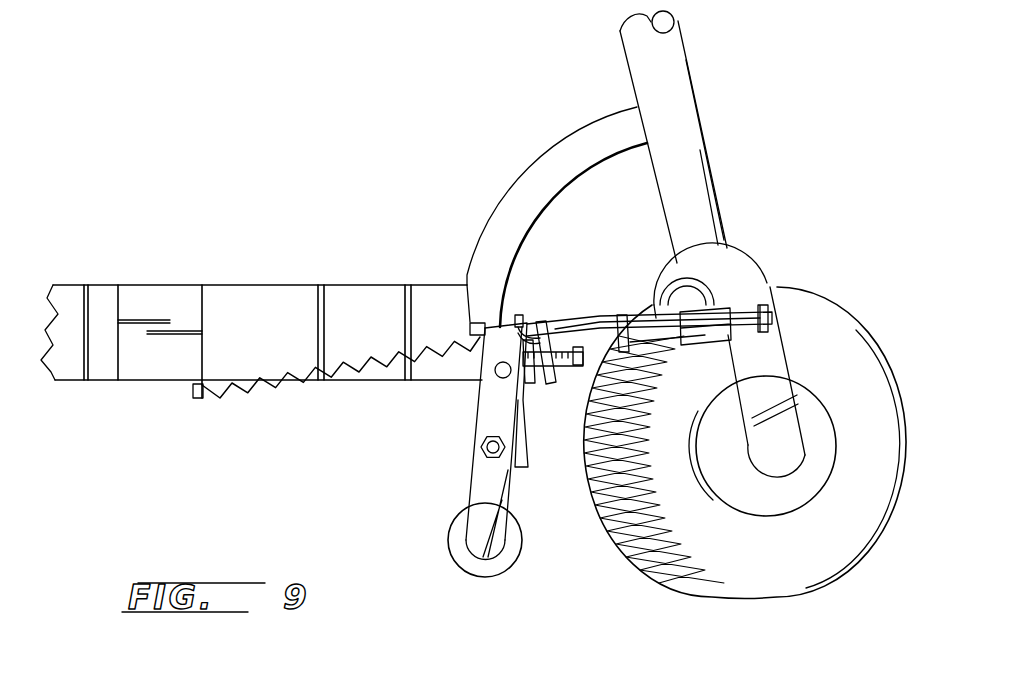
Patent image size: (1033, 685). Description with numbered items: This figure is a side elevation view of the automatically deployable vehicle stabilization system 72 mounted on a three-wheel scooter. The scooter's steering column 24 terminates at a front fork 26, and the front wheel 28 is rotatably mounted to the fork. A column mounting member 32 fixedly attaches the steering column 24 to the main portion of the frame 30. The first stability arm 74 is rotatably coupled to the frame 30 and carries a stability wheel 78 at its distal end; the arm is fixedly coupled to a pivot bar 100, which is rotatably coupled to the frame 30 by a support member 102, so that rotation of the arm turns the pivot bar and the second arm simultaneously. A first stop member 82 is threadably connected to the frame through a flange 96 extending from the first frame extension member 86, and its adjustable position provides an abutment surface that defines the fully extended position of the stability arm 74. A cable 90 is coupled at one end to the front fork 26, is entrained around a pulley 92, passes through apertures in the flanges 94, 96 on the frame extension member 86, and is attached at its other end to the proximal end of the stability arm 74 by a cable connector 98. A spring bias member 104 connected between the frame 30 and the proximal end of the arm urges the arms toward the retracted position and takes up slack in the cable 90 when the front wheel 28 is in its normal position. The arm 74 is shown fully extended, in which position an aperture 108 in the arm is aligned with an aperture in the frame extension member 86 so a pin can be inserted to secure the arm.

The vehicle stabilization system 72 is at (350, 153).
The steering column 24 is at (655, 72).
The column mounting member 32 is at (545, 182).
The frame 30 is at (258, 330).
The cable connector 98 is at (520, 317).
The flange 96 is at (540, 323).
The cable 90 is at (592, 327).
The flange 94 is at (622, 318).
The first frame extension member 86 is at (770, 292).
The front fork 26 is at (770, 368).
The pulley 92 is at (700, 345).
The aperture 108 is at (500, 378).
The first stop member 82 is at (565, 372).
The pivot bar 100 is at (480, 452).
The first stability arm 74 is at (484, 512).
The support member 102 is at (530, 445).
The spring bias member 104 is at (215, 394).
The front wheel 28 is at (640, 555).
The stability wheel 78 is at (474, 570).